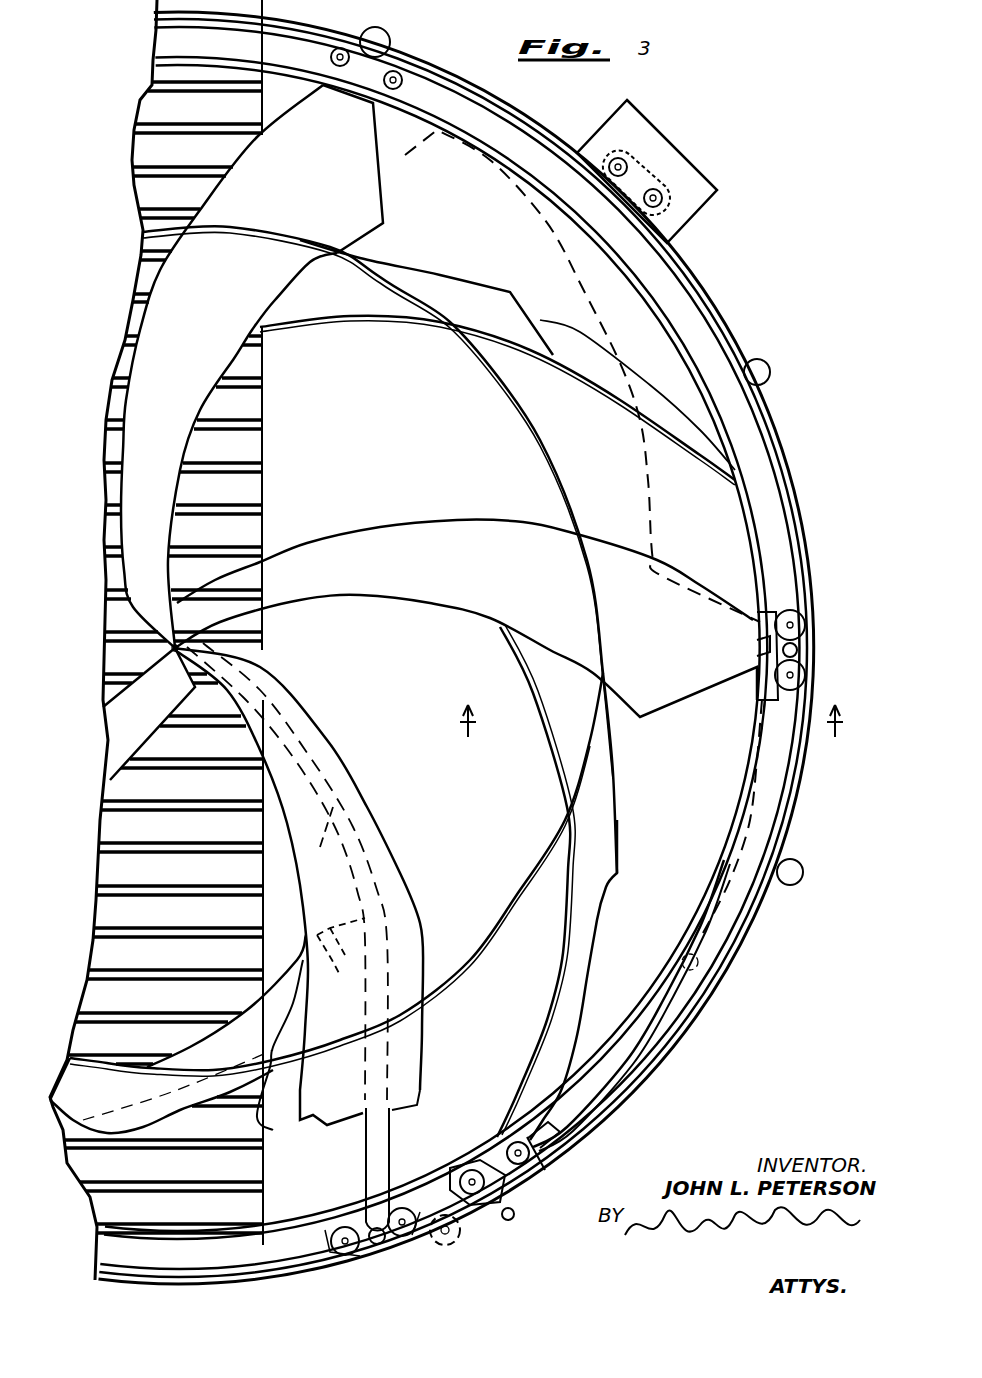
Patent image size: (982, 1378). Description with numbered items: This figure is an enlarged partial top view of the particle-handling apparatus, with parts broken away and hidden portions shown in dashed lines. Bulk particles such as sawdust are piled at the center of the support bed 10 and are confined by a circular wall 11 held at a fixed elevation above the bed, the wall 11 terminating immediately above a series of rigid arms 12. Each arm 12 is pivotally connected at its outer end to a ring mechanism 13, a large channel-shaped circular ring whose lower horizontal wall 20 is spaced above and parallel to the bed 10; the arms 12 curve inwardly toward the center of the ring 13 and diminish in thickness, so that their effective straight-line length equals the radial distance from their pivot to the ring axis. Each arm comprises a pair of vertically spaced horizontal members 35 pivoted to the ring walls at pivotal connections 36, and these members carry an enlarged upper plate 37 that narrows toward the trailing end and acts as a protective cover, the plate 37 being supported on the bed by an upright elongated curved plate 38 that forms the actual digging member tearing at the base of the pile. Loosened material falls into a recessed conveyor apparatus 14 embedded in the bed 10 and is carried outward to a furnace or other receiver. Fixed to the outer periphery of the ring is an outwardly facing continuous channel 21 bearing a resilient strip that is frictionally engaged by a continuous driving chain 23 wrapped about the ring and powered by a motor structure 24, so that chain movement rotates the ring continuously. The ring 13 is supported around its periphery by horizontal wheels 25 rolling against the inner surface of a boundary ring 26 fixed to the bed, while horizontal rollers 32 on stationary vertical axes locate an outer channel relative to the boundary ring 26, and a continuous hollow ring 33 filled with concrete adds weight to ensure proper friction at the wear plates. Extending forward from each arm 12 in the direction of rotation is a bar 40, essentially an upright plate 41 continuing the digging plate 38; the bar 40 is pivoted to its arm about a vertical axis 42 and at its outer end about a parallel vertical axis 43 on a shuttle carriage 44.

The support bed 10 is at (420, 459).
The confining circular wall 11 is at (540, 440).
The rigid arm 12 is at (395, 201).
The ring mechanism 13 is at (780, 530).
The recessed conveyor apparatus 14 is at (253, 487).
The lower horizontal wall 20 is at (450, 1170).
The continuous channel 21 is at (505, 1220).
The continuous driving chain 23 is at (636, 165).
The motor structure 24 is at (703, 165).
The horizontal wheel 25 is at (803, 620).
The boundary ring 26 is at (795, 825).
The horizontal roller 32 is at (443, 1250).
The continuous hollow ring 33 is at (762, 465).
The horizontal member 35 is at (757, 645).
The pivotal connection 36 is at (800, 648).
The upper plate 37 is at (228, 355).
The upright elongated curved plate 38 is at (287, 871).
The bar 40 is at (411, 333).
The upright plate 41 is at (357, 323).
The pivot axis 42 is at (317, 935).
The pivot axis 43 is at (513, 1178).
The shuttle carriage 44 is at (538, 1175).